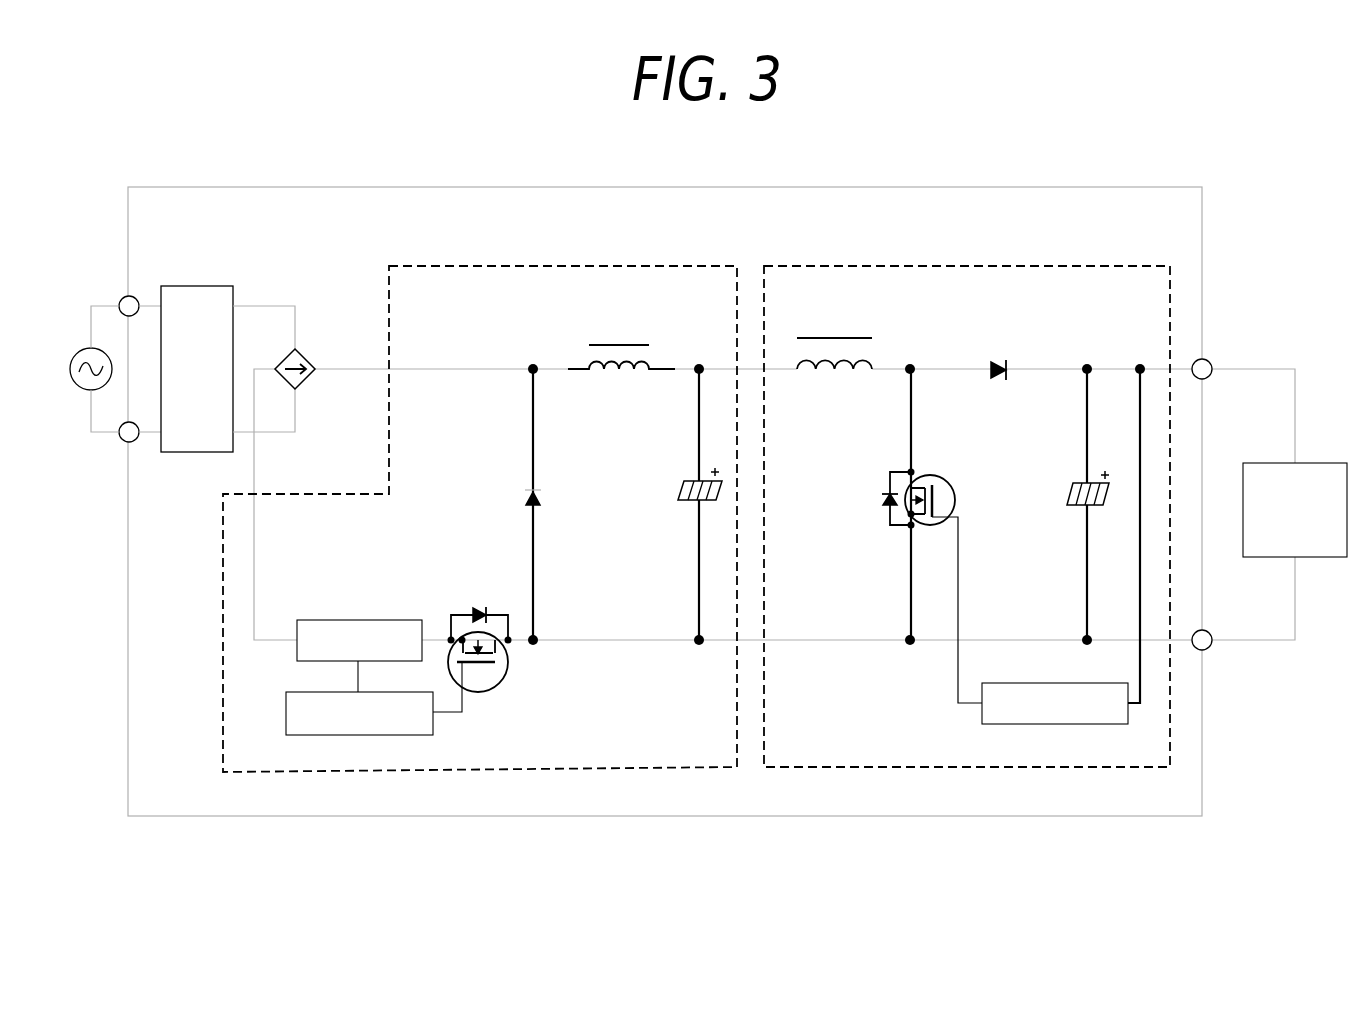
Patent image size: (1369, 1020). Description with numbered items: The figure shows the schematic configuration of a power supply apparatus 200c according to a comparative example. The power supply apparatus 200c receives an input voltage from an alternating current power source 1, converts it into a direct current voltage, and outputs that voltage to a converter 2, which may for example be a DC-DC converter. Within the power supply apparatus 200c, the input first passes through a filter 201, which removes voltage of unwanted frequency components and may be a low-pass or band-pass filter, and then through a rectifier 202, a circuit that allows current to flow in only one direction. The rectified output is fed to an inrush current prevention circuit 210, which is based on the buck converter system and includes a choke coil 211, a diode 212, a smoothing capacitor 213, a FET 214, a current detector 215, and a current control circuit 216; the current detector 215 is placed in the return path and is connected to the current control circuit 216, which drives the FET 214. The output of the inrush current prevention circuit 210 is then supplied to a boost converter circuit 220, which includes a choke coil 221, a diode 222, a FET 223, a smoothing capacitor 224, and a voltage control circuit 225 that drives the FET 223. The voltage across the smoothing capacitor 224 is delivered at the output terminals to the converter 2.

The AC power source 1 is at (80, 358).
The converter 2 is at (1312, 462).
The power supply apparatus 200c is at (1060, 187).
The filter 201 is at (194, 286).
The rectifier 202 is at (303, 355).
The inrush current prevention circuit 210 is at (632, 265).
The choke coil 211 is at (614, 345).
The diode 212 is at (541, 498).
The smoothing capacitor 213 is at (679, 491).
The FET 214 is at (505, 678).
The current detector 215 is at (353, 620).
The current control circuit 216 is at (286, 716).
The boost converter circuit 220 is at (1072, 264).
The choke coil 221 is at (828, 338).
The diode 222 is at (993, 360).
The FET 223 is at (938, 478).
The smoothing capacitor 224 is at (1065, 491).
The voltage control circuit 225 is at (1050, 683).